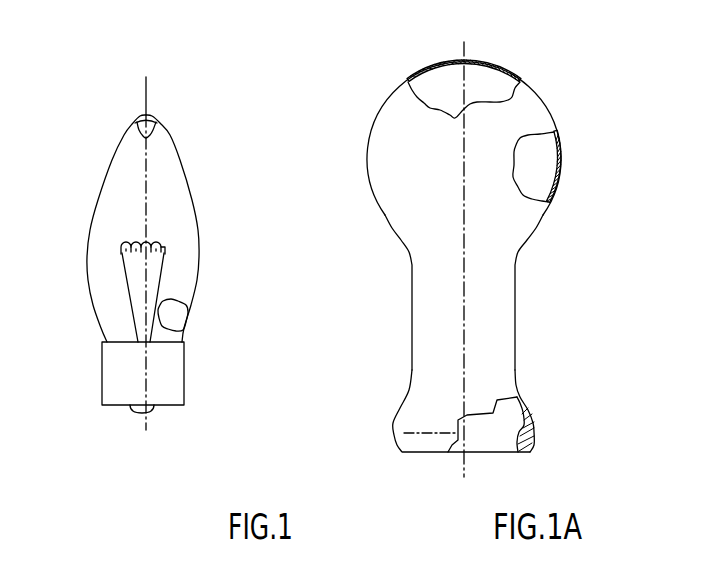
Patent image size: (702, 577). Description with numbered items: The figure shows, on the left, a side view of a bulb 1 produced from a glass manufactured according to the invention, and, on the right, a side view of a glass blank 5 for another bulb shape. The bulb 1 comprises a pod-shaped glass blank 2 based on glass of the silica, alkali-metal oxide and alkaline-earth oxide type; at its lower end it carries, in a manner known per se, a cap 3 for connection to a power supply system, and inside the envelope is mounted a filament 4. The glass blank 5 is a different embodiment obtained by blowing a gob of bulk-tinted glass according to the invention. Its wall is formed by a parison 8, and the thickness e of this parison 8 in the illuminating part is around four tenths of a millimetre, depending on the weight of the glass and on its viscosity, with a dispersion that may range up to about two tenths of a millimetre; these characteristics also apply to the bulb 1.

In FIG. 1, the bulb 1 is at (218, 220).
In FIG. 1, the pod-shaped glass blank 2 is at (98, 297).
In FIG. 1, the cap 3 is at (175, 380).
In FIG. 1, the filament 4 is at (159, 281).
In FIG. 1A, the glass blank 5 is at (571, 198).
In FIG. 1A, the parison 8 is at (432, 65).
In FIG. 1A, the thickness e is at (486, 82).